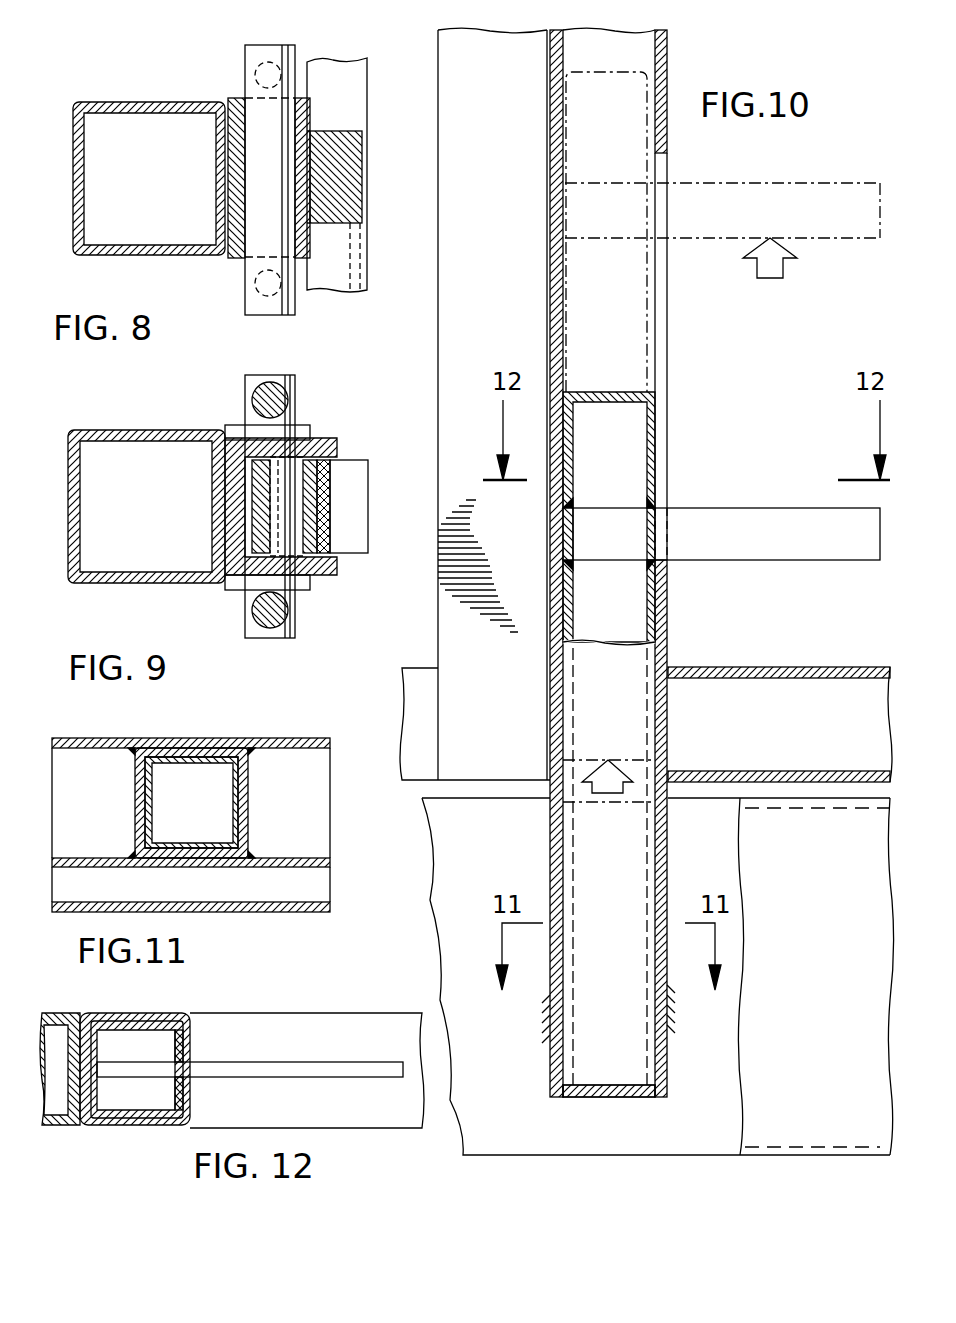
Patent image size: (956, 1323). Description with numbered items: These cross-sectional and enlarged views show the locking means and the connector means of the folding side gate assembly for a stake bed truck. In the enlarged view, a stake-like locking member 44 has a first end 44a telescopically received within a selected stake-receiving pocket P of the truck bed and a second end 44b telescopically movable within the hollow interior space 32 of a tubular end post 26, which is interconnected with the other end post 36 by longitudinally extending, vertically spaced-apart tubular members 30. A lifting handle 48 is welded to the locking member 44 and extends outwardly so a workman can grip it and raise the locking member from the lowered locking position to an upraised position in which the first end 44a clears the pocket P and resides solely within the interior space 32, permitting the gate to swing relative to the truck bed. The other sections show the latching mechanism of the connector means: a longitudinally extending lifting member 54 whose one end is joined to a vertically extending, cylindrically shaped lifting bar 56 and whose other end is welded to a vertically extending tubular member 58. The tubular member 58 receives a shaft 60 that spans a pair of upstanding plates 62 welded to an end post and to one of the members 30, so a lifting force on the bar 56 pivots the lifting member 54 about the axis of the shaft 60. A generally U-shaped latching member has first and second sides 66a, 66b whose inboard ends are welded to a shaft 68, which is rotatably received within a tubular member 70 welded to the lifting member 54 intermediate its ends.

In FIG. 12, the end post 26 is at (173, 1013).
In FIG. 10, the end post 26 is at (557, 160).
In FIG. 8, the tubular member 30 is at (93, 102).
In FIG. 9, the tubular member 30 is at (112, 430).
In FIG. 12, the tubular member 30 is at (405, 1118).
In FIG. 10, the tubular member 30 is at (777, 667).
In FIG. 12, the hollow interior space 32 is at (118, 1098).
In FIG. 10, the hollow interior space 32 is at (622, 372).
In FIG. 12, the end post 36 is at (65, 1122).
In FIG. 10, the end post 36 is at (475, 404).
In FIG. 11, the locking member 44 is at (233, 805).
In FIG. 12, the locking member 44 is at (178, 1100).
In FIG. 10, the locking member 44 is at (627, 62).
In FIG. 11, the first end 44a is at (210, 760).
In FIG. 10, the first end 44a is at (613, 1052).
In FIG. 12, the second end 44b is at (177, 1043).
In FIG. 10, the second end 44b is at (653, 433).
In FIG. 12, the lifting handle 48 is at (323, 1067).
In FIG. 10, the lifting handle 48 is at (750, 183).
In FIG. 8, the lifting member 54 is at (333, 140).
In FIG. 9, the lifting member 54 is at (357, 480).
In FIG. 8, the lifting bar 56 is at (340, 72).
In FIG. 9, the tubular member 58 is at (252, 483).
In FIG. 9, the shaft 60 is at (280, 527).
In FIG. 9, the upstanding plate 62 is at (323, 440).
In FIG. 8, the first side 66a is at (254, 83).
In FIG. 9, the first side 66a is at (277, 399).
In FIG. 8, the second side 66b is at (256, 296).
In FIG. 9, the second side 66b is at (257, 610).
In FIG. 8, the shaft 68 is at (258, 180).
In FIG. 9, the shaft 68 is at (243, 392).
In FIG. 8, the tubular member 70 is at (237, 138).
In FIG. 9, the tubular member 70 is at (300, 577).
In FIG. 11, the stake-receiving pocket P is at (155, 798).
In FIG. 10, the stake-receiving pocket P is at (573, 830).